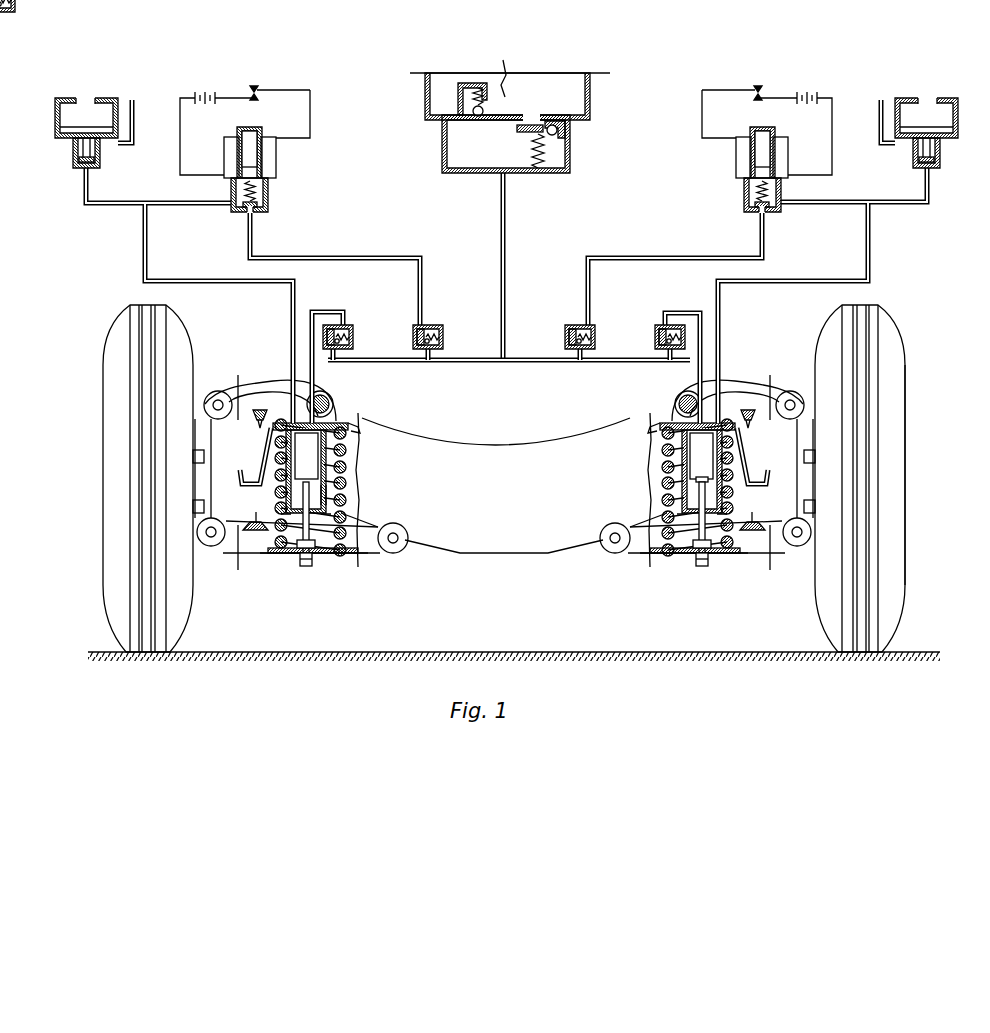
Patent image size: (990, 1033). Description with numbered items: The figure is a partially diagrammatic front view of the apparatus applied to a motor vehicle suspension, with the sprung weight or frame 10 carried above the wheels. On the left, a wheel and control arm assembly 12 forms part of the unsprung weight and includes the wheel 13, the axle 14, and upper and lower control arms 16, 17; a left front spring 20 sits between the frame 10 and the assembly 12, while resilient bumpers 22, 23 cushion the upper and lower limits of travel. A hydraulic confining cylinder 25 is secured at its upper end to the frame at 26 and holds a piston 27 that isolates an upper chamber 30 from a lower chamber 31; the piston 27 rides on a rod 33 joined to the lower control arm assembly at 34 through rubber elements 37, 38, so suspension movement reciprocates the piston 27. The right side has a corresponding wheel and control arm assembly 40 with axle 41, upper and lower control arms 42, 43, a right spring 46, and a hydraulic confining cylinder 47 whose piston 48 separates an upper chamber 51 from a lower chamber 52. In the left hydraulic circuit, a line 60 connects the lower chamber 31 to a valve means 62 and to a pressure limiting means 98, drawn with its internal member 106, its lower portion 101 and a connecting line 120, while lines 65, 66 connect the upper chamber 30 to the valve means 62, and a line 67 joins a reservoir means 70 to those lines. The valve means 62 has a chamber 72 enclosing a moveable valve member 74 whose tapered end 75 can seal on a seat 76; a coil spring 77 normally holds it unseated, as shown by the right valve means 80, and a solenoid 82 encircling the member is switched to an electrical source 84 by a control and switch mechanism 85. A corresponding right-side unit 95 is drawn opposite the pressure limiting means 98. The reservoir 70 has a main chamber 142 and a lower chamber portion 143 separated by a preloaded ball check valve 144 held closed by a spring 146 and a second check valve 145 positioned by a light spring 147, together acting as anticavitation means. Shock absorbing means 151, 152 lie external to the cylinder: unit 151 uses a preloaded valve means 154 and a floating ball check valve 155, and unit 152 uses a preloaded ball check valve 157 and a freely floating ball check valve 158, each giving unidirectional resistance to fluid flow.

The sprung weight 10 is at (518, 509).
The left front wheel and control arm assembly 12 is at (889, 478).
The wheel 13 is at (906, 500).
The axle 14 is at (805, 470).
The upper control arm 16 is at (757, 357).
The lower control arm 17 is at (772, 555).
The left front spring 20 is at (735, 463).
The resilient bumper 22 is at (752, 410).
The resilient bumper 23 is at (752, 520).
The hydraulic confining cylinder 25 is at (668, 475).
The upper end securement 26 is at (680, 425).
The piston 27 is at (700, 478).
The upper chamber 30 is at (700, 450).
The lower chamber 31 is at (692, 498).
The rod 33 is at (676, 520).
The lower control arm assembly connection 34 is at (685, 555).
The rubber element 37 is at (712, 560).
The rubber element 38 is at (702, 568).
The right front wheel and control arm assembly 40 is at (100, 393).
The axle 41 is at (203, 485).
The upper control arm 42 is at (262, 385).
The lower control arm 43 is at (258, 557).
The right spring 46 is at (280, 447).
The hydraulic confining cylinder 47 is at (352, 428).
The piston 48 is at (312, 482).
The upper chamber 51 is at (320, 448).
The lower chamber 52 is at (325, 495).
The line 60 is at (800, 282).
The valve means 62 is at (753, 179).
The line 65 is at (700, 365).
The line 66 is at (640, 258).
The line 67 is at (508, 235).
The reservoir means 70 is at (501, 109).
The chamber 72 is at (748, 192).
The moveable valve member 74 is at (762, 140).
The tapered end 75 is at (775, 212).
The seat 76 is at (757, 212).
The coil spring 77 is at (780, 192).
The right valve means 80 is at (277, 152).
The solenoid 82 is at (737, 150).
The source of electrical energy 84 is at (822, 96).
The control and switch mechanism 85 is at (758, 86).
The left master cylinder 95 is at (55, 118).
The pressure limiting means 98 is at (932, 136).
The cylinder bore 101 is at (935, 183).
The piston 106 is at (927, 125).
The supply line 120 is at (878, 105).
The main chamber 142 is at (437, 100).
The lower chamber portion 143 is at (440, 157).
The preloaded ball check valve 144 is at (490, 110).
The check valve 145 is at (518, 130).
The spring 146 is at (482, 92).
The light acting spring 147 is at (545, 162).
The shock absorbing means 151 is at (576, 312).
The shock absorbing means 152 is at (695, 317).
The preloaded valve means 154 is at (566, 337).
The floating ball check valve means 155 is at (595, 340).
The preloaded ball check valve 157 is at (658, 343).
The freely floating ball check valve 158 is at (684, 343).